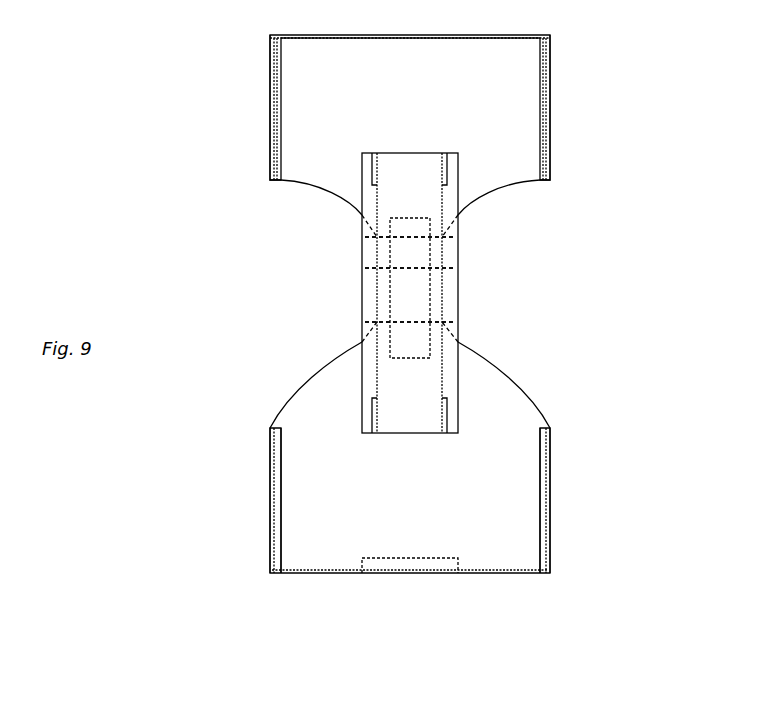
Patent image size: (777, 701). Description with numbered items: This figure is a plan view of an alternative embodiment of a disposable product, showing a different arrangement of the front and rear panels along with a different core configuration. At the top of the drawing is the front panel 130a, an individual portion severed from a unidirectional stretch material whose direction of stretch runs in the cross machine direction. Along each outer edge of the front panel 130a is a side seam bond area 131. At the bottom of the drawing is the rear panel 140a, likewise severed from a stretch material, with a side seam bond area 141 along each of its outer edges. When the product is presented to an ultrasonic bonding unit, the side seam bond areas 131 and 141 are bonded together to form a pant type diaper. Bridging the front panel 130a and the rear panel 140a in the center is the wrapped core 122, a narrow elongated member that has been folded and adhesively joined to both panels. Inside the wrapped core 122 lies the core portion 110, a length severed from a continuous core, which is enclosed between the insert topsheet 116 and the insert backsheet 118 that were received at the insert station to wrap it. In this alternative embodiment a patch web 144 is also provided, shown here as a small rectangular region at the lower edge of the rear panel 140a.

The core portion 110 is at (420, 298).
The insert topsheet 116 is at (448, 285).
The insert backsheet 118 is at (410, 279).
The wrapped core 122 is at (360, 288).
The front panel 130a is at (325, 125).
The side seam bond area 131 is at (275, 93).
The rear panel 140a is at (332, 522).
The side seam bond area 141 is at (276, 483).
The patch web 144 is at (403, 563).